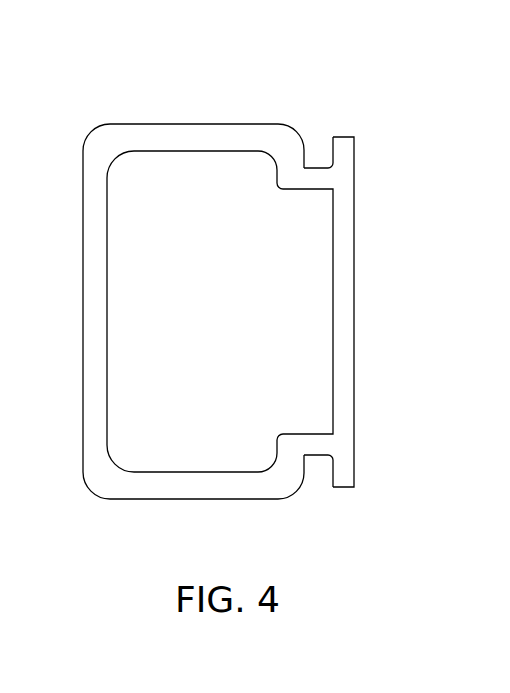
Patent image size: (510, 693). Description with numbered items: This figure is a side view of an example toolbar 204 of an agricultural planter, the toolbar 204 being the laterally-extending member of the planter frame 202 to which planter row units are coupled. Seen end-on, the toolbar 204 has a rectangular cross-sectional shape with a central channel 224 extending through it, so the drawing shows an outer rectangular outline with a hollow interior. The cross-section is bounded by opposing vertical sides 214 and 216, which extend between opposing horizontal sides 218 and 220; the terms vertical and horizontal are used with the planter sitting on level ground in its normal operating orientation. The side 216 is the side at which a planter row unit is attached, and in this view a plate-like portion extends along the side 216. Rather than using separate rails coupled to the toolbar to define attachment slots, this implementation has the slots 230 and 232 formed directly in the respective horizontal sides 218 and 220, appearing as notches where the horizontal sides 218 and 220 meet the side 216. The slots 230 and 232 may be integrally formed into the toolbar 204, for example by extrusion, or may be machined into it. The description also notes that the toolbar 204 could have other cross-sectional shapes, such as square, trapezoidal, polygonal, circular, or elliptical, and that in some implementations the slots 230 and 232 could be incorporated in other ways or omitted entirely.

The frame 202 is at (78, 75).
The toolbar 204 is at (83, 226).
The vertical side 214 is at (83, 351).
The vertical side 216 is at (355, 340).
The horizontal side 218 is at (215, 124).
The horizontal side 220 is at (175, 499).
The central channel 224 is at (236, 313).
The slot 230 is at (316, 140).
The slot 232 is at (318, 482).